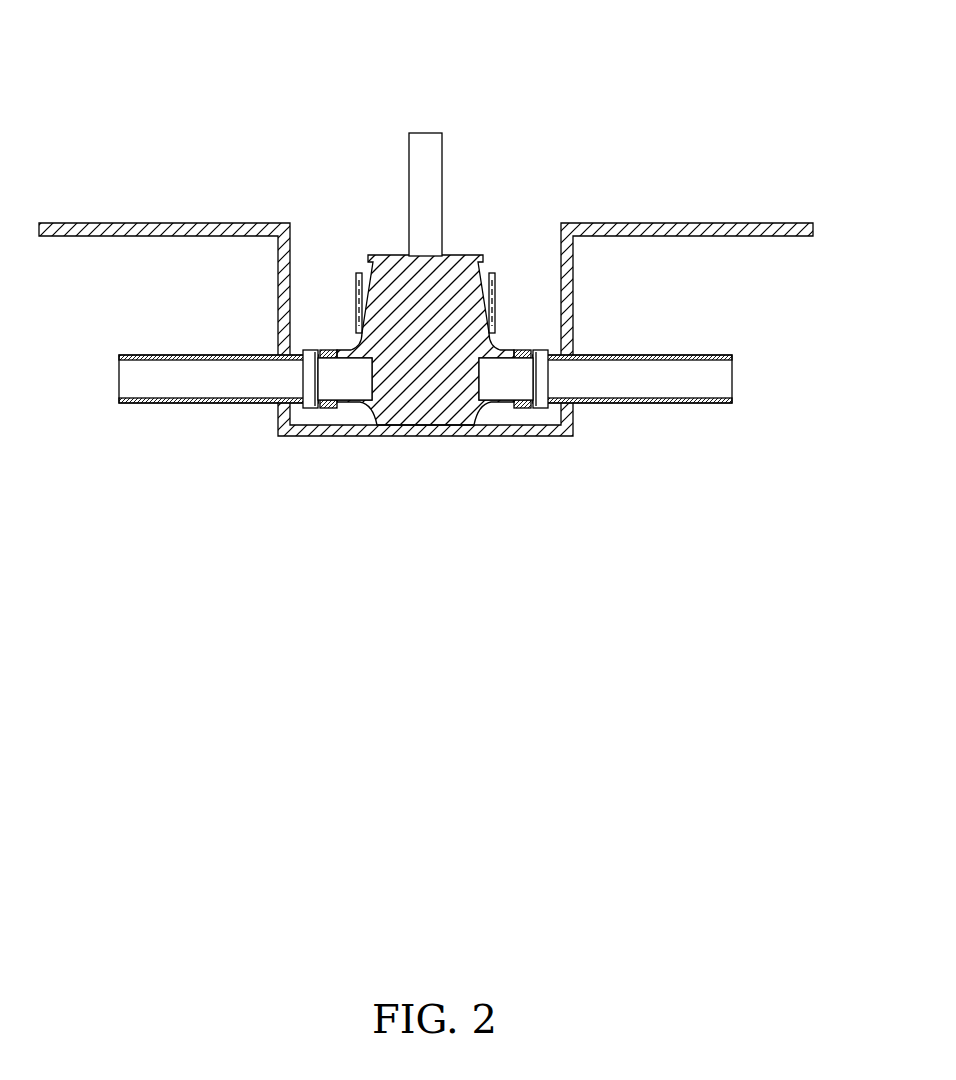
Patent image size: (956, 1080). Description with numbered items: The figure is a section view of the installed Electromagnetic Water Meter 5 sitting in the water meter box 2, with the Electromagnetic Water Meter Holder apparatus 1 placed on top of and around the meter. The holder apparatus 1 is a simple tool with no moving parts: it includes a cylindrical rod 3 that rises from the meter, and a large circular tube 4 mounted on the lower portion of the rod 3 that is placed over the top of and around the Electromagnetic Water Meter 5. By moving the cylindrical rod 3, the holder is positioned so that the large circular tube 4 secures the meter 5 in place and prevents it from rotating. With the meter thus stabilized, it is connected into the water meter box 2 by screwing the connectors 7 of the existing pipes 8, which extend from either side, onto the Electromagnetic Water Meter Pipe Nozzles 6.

The Electromagnetic Water Meter Holder apparatus 1 is at (503, 130).
The water meter box 2 is at (174, 223).
The cylindrical rod 3 is at (443, 228).
The large circular tube 4 is at (357, 273).
The Electromagnetic Water Meter 5 is at (413, 400).
The Electromagnetic Water Meter Pipe Nozzles 6 is at (337, 406).
The connectors 7 is at (318, 405).
The existing pipes 8 is at (180, 403).